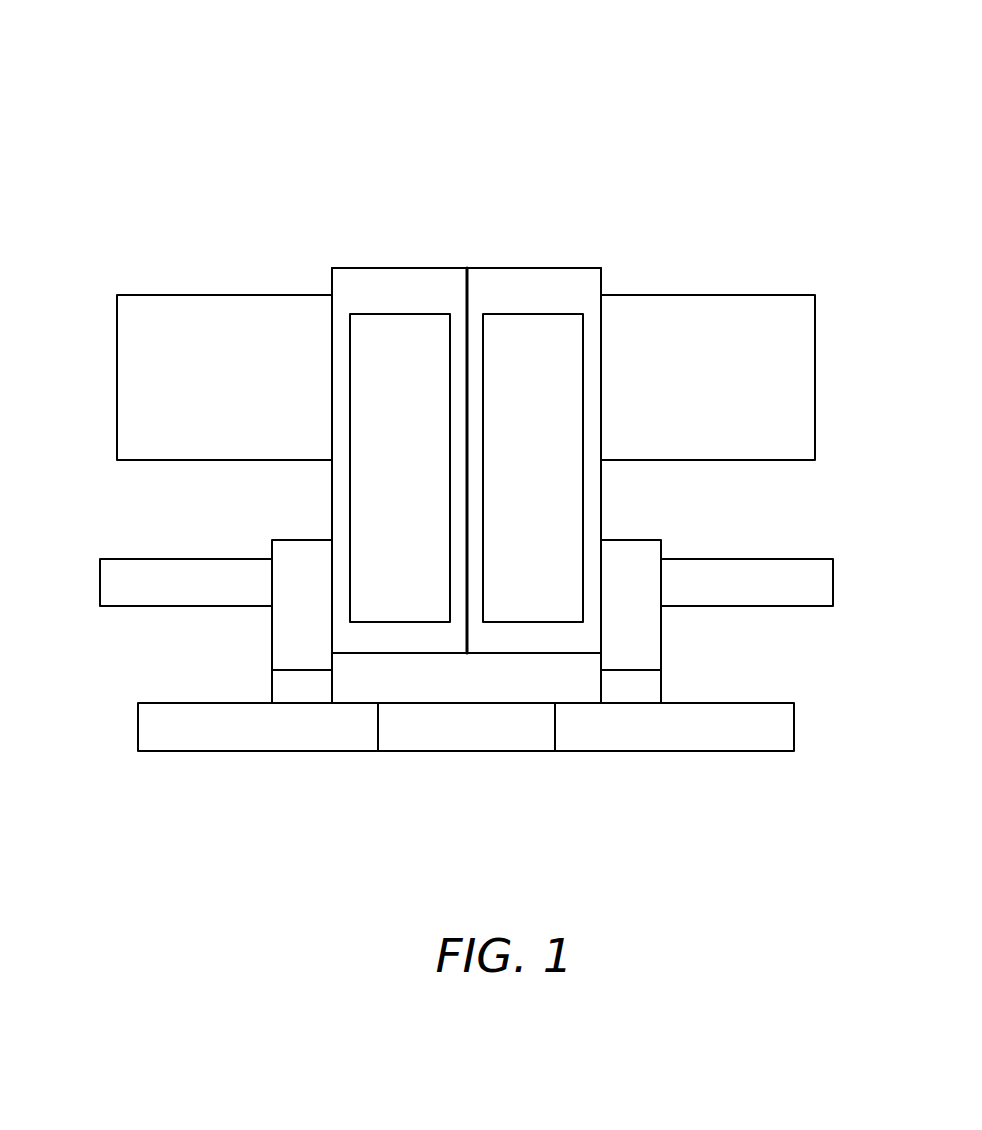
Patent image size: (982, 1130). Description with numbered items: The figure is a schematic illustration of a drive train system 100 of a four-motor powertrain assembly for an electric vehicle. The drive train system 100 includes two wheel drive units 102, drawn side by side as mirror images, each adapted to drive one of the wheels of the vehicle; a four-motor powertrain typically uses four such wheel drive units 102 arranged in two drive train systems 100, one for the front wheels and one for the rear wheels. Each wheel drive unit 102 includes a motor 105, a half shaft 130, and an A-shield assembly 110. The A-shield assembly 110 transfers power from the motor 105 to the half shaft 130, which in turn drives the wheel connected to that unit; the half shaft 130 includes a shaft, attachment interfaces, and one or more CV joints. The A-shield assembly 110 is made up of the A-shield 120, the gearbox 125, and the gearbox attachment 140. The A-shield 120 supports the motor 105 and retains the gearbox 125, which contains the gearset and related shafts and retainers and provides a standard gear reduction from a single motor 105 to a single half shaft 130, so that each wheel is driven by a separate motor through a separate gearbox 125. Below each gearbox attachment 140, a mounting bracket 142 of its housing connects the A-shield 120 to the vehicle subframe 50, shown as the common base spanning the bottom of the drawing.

The drive train system 100 is at (526, 110).
The wheel drive unit 102 is at (360, 178).
The motor 105 is at (163, 320).
The A-shield assembly 110 is at (238, 514).
The A-shield 120 is at (357, 287).
The gearbox 125 is at (368, 432).
The half shaft 130 is at (130, 572).
The gearbox attachment 140 is at (270, 650).
The mounting bracket 142 is at (293, 693).
The vehicle subframe 50 is at (480, 727).